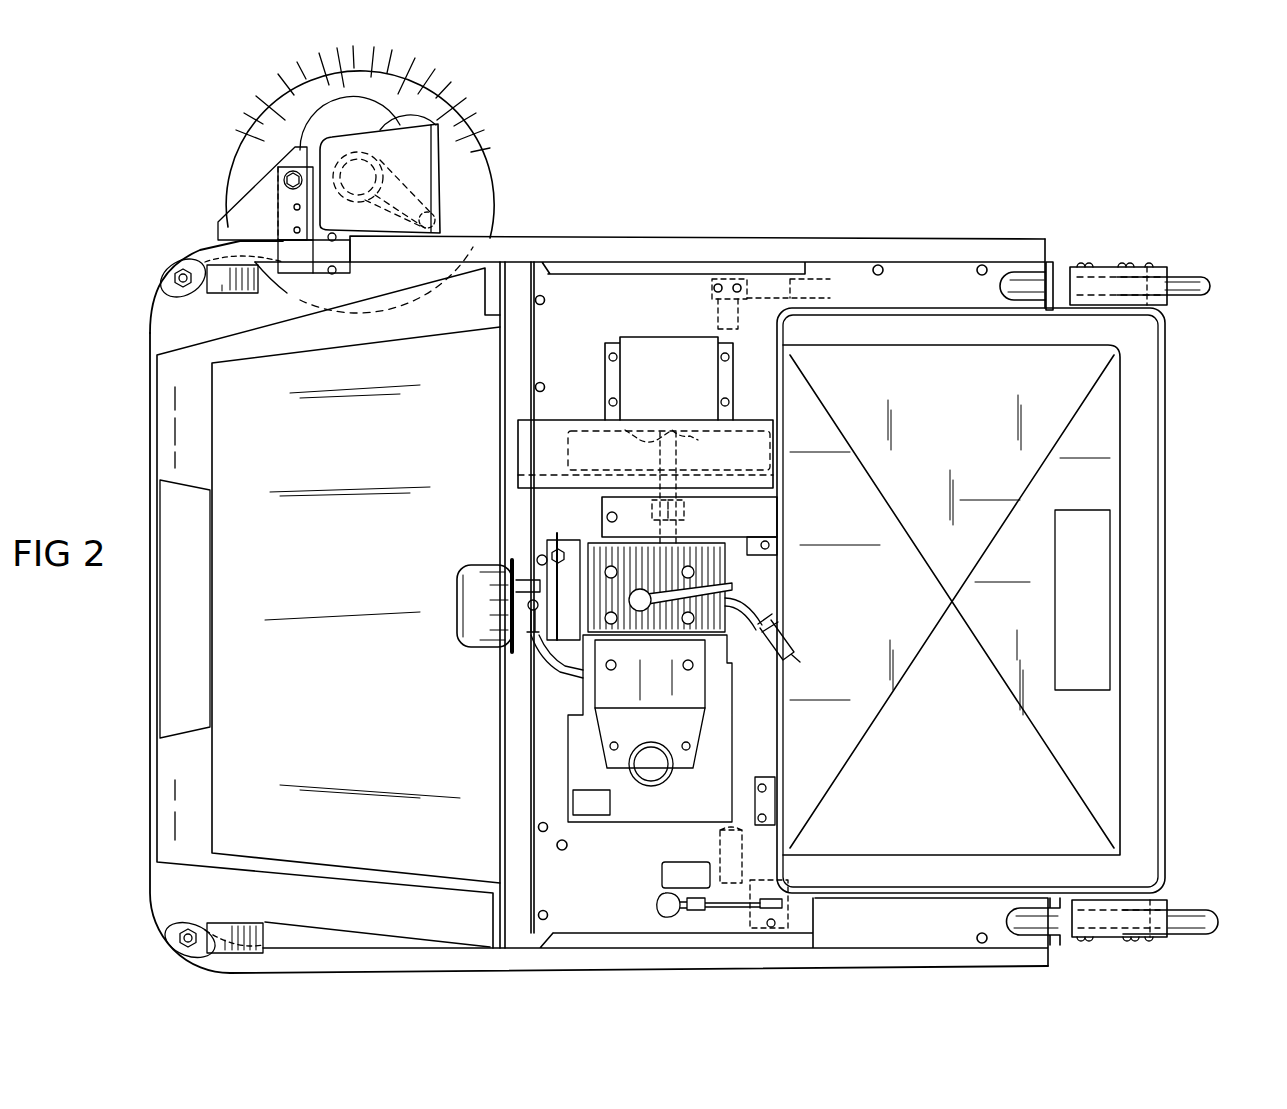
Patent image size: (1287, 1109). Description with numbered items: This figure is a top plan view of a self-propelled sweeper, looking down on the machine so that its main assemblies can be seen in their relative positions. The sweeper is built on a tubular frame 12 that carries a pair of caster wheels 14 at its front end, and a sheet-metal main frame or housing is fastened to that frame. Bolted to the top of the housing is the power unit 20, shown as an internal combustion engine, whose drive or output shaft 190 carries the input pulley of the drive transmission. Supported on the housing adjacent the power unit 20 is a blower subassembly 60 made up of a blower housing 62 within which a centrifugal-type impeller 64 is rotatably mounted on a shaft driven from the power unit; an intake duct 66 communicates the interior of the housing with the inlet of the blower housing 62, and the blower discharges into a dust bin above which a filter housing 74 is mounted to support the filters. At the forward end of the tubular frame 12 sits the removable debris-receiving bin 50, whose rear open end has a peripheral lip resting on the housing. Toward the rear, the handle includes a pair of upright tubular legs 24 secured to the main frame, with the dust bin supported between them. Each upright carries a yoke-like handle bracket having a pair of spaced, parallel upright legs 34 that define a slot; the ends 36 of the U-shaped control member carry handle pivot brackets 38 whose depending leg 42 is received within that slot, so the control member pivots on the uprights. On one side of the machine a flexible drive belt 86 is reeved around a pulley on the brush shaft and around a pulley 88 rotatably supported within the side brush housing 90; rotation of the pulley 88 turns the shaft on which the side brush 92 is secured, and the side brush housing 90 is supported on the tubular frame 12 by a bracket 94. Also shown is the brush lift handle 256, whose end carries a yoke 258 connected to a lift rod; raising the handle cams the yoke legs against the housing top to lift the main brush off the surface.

The tubular frame 12 is at (168, 921).
The caster wheels 14 is at (173, 265).
The power unit 20 is at (490, 658).
The upright tubular legs 24 is at (1047, 268).
The upright legs 34 is at (1103, 267).
The ends 36 is at (1195, 912).
The handle pivot brackets 38 is at (1151, 257).
The depending leg 42 is at (1073, 267).
The debris-receiving bin 50 is at (329, 581).
The blower subassembly 60 is at (508, 464).
The blower housing 62 is at (580, 420).
The impeller 64 is at (640, 440).
The intake duct 66 is at (672, 340).
The filter housing 74 is at (1108, 433).
The drive belt 86 is at (502, 234).
The pulley 88 is at (380, 163).
The side brush housing 90 is at (427, 160).
The side brush 92 is at (247, 135).
The bracket 94 is at (287, 257).
The output shaft 190 is at (683, 518).
The brush lift handle 256 is at (737, 906).
The yoke 258 is at (780, 903).